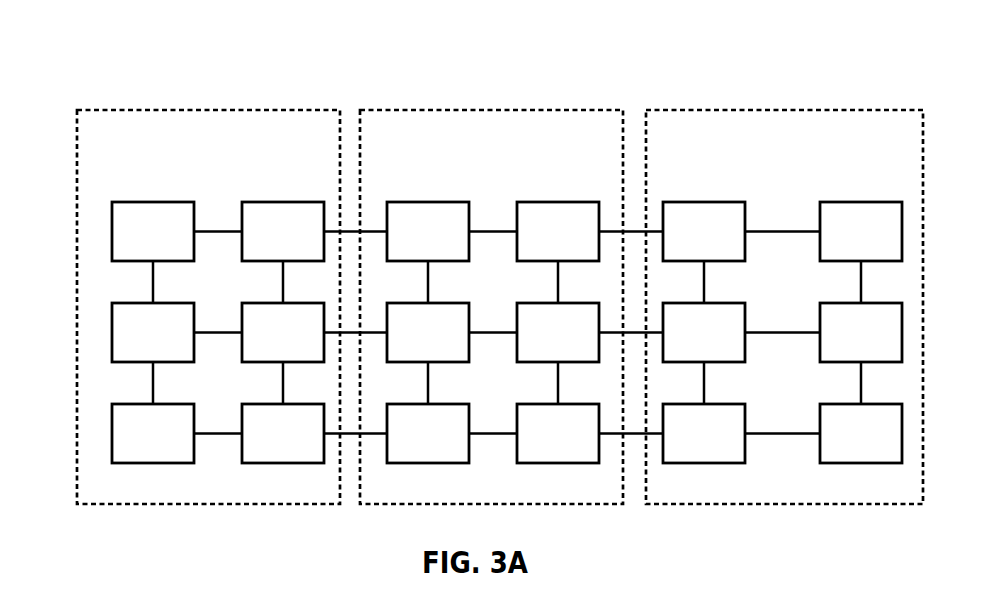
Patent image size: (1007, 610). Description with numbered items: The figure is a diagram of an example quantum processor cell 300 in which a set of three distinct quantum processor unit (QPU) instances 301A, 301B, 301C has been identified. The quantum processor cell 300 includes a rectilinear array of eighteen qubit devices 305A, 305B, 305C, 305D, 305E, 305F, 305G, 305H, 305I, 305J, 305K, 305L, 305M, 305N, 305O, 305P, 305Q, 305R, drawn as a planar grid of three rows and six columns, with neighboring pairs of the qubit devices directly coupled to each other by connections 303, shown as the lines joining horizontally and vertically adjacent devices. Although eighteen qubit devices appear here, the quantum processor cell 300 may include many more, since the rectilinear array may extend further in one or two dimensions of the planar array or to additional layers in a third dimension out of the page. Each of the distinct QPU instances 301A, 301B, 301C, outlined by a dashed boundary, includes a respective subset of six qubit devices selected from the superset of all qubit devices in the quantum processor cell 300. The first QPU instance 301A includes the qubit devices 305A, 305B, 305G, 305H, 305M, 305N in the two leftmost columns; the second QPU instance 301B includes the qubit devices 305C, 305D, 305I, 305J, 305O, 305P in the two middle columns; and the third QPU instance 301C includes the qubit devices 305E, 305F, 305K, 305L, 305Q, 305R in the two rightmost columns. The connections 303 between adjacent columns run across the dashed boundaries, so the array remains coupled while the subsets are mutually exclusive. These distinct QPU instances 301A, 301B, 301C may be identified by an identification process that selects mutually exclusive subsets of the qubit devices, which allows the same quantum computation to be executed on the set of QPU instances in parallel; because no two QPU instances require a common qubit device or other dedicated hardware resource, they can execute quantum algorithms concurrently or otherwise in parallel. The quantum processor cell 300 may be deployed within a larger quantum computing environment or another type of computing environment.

The quantum processor cell 300 is at (107, 38).
The first QPU instance 301A is at (293, 110).
The second QPU instance 301B is at (532, 110).
The third QPU instance 301C is at (810, 110).
The connections 303 is at (222, 231).
The qubit device 305A is at (125, 244).
The qubit device 305B is at (255, 244).
The qubit device 305C is at (400, 244).
The qubit device 305D is at (530, 244).
The qubit device 305E is at (676, 244).
The qubit device 305F is at (834, 244).
The qubit device 305G is at (125, 345).
The qubit device 305H is at (255, 345).
The qubit device 305I is at (404, 345).
The qubit device 305J is at (532, 345).
The qubit device 305K is at (676, 345).
The qubit device 305L is at (834, 345).
The qubit device 305M is at (123, 446).
The qubit device 305N is at (255, 446).
The qubit device 305O is at (399, 446).
The qubit device 305P is at (530, 446).
The qubit device 305Q is at (675, 446).
The qubit device 305R is at (833, 446).